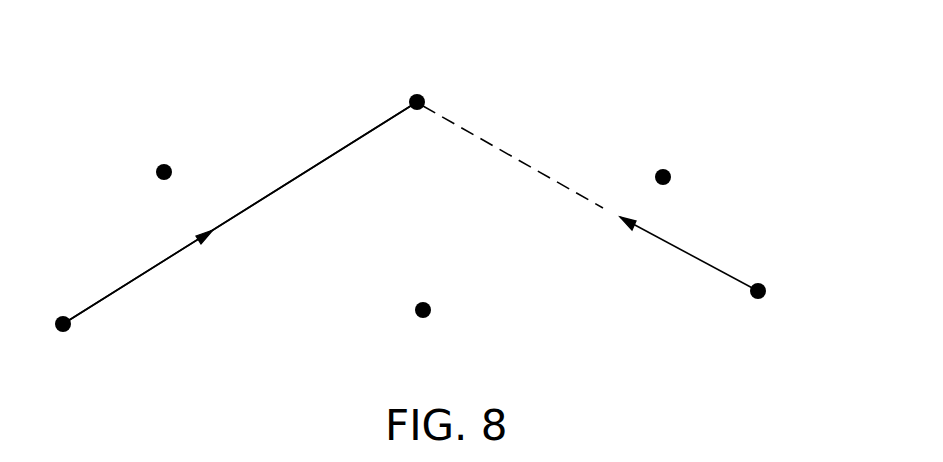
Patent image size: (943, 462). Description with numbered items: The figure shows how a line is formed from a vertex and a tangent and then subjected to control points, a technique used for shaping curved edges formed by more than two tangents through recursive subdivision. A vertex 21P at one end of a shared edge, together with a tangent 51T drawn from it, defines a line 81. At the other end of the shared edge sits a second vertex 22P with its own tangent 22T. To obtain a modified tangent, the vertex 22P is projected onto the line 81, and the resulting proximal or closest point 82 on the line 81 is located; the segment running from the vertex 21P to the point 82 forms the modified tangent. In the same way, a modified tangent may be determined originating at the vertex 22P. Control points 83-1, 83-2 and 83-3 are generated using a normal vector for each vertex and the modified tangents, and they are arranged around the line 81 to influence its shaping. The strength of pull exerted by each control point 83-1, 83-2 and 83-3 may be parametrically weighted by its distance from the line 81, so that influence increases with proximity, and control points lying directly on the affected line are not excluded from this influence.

The line 81 is at (297, 175).
The proximal point 82 is at (418, 94).
The control point 83-1 is at (158, 180).
The control point 83-2 is at (429, 316).
The control point 83-3 is at (668, 168).
The tangent 51T is at (152, 268).
The vertex 21P is at (66, 344).
The tangent 22T is at (693, 253).
The vertex 22P is at (775, 308).